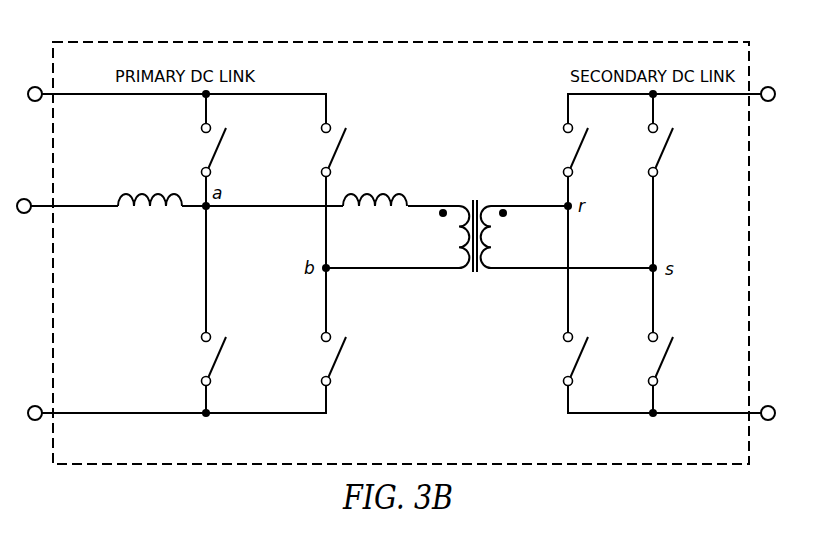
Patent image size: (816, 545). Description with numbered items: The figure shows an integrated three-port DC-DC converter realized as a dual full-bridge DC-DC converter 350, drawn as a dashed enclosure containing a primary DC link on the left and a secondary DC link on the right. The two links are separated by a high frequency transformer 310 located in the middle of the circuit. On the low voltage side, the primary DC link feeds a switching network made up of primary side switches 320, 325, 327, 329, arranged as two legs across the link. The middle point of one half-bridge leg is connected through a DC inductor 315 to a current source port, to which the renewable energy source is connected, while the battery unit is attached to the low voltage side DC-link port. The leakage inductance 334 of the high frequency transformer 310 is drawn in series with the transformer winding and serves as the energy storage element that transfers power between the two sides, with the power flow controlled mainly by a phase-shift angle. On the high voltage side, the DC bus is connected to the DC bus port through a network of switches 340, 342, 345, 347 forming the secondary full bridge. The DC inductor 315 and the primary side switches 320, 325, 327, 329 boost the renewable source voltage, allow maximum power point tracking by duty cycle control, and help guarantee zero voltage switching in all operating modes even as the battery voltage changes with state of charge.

The high frequency transformer 310 is at (478, 200).
The DC inductor 315 is at (132, 195).
The primary side switch 320 is at (220, 142).
The primary side switch 325 is at (220, 352).
The primary side switch 327 is at (340, 142).
The primary side switch 329 is at (340, 356).
The leakage inductance 334 is at (393, 195).
The switch 340 is at (583, 142).
The switch 342 is at (576, 354).
The switch 345 is at (668, 142).
The switch 347 is at (668, 351).
The dual full-bridge DC-DC converter 350 is at (685, 42).